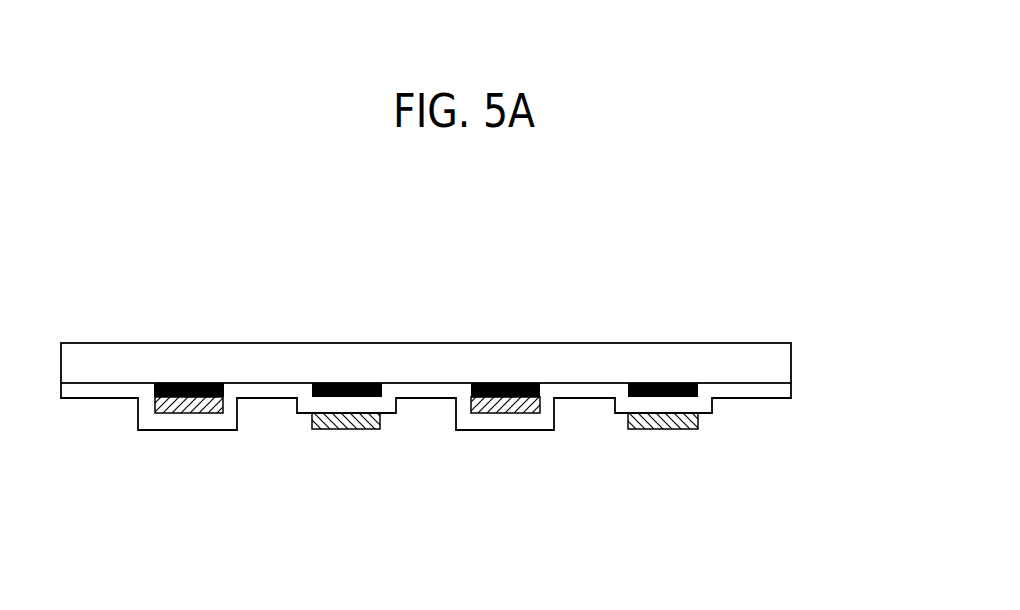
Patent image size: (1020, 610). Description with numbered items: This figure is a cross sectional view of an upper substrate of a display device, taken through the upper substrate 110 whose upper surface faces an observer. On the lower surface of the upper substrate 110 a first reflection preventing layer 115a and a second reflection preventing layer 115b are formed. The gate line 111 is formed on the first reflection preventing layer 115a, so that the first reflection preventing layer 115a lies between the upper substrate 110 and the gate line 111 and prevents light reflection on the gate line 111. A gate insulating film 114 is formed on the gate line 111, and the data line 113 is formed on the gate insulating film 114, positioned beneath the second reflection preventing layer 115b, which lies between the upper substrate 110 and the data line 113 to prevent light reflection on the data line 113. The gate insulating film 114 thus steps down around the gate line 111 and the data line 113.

The upper substrate 110 is at (791, 351).
The gate insulating film 114 is at (791, 386).
The first reflection preventing layer 115a is at (192, 383).
The second reflection preventing layer 115b is at (348, 383).
The gate line 111 is at (191, 430).
The data line 113 is at (347, 430).